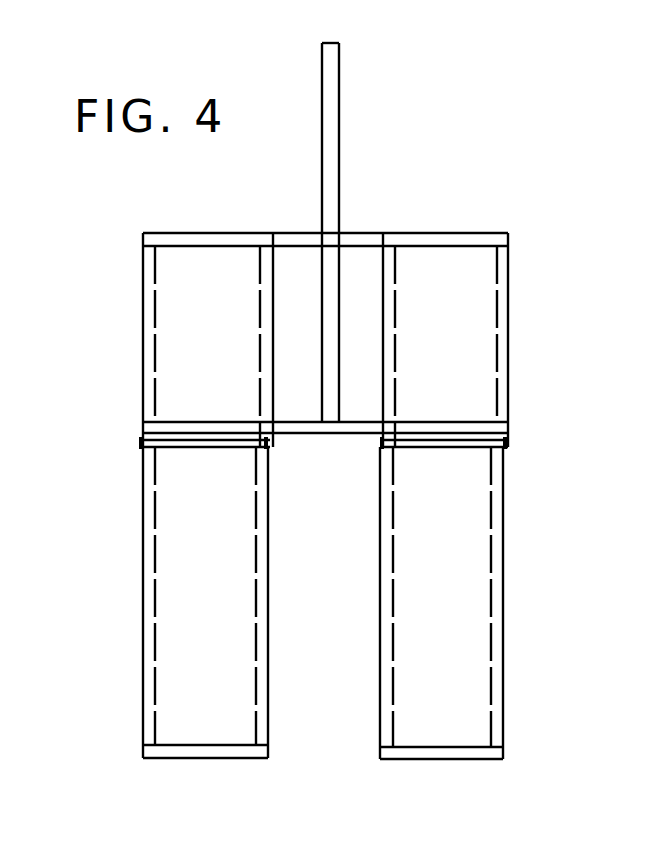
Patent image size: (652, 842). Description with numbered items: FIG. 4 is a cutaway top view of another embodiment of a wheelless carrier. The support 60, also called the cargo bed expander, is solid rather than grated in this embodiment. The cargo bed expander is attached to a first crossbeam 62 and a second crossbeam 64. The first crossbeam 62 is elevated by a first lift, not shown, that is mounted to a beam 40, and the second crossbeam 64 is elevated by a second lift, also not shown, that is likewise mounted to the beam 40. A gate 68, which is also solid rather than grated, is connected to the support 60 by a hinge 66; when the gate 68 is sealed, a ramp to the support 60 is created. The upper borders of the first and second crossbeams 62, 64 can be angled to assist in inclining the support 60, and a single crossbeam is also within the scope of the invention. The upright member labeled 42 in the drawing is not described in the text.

The beam 40 is at (331, 405).
The upright post 42 is at (333, 90).
The support 60 is at (457, 319).
The first crossbeam 62 is at (370, 240).
The second crossbeam 64 is at (477, 430).
The hinge 66 is at (142, 442).
The gate 68 is at (472, 500).